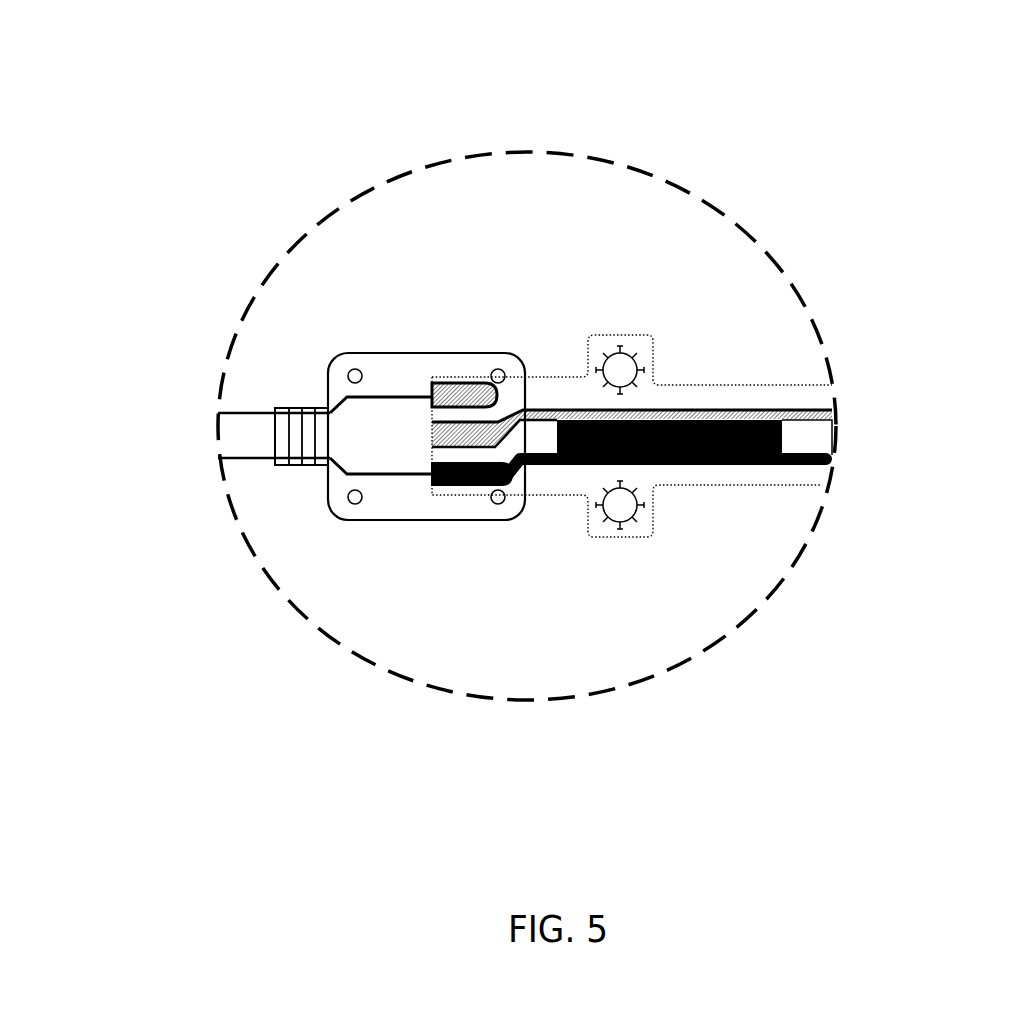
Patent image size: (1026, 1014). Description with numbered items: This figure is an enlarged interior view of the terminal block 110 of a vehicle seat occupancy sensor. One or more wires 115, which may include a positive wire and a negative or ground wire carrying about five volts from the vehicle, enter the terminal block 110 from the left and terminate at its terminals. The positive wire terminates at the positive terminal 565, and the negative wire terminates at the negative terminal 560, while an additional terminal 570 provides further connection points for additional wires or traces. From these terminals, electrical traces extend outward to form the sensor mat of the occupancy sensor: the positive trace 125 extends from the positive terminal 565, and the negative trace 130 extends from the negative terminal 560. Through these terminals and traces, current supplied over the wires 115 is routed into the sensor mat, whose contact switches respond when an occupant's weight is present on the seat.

The terminal block 110 is at (828, 105).
The wires 115 is at (258, 436).
The positive trace 125 is at (703, 410).
The negative trace 130 is at (773, 463).
The negative terminal 560 is at (457, 488).
The positive terminal 565 is at (430, 418).
The additional terminal 570 is at (462, 383).